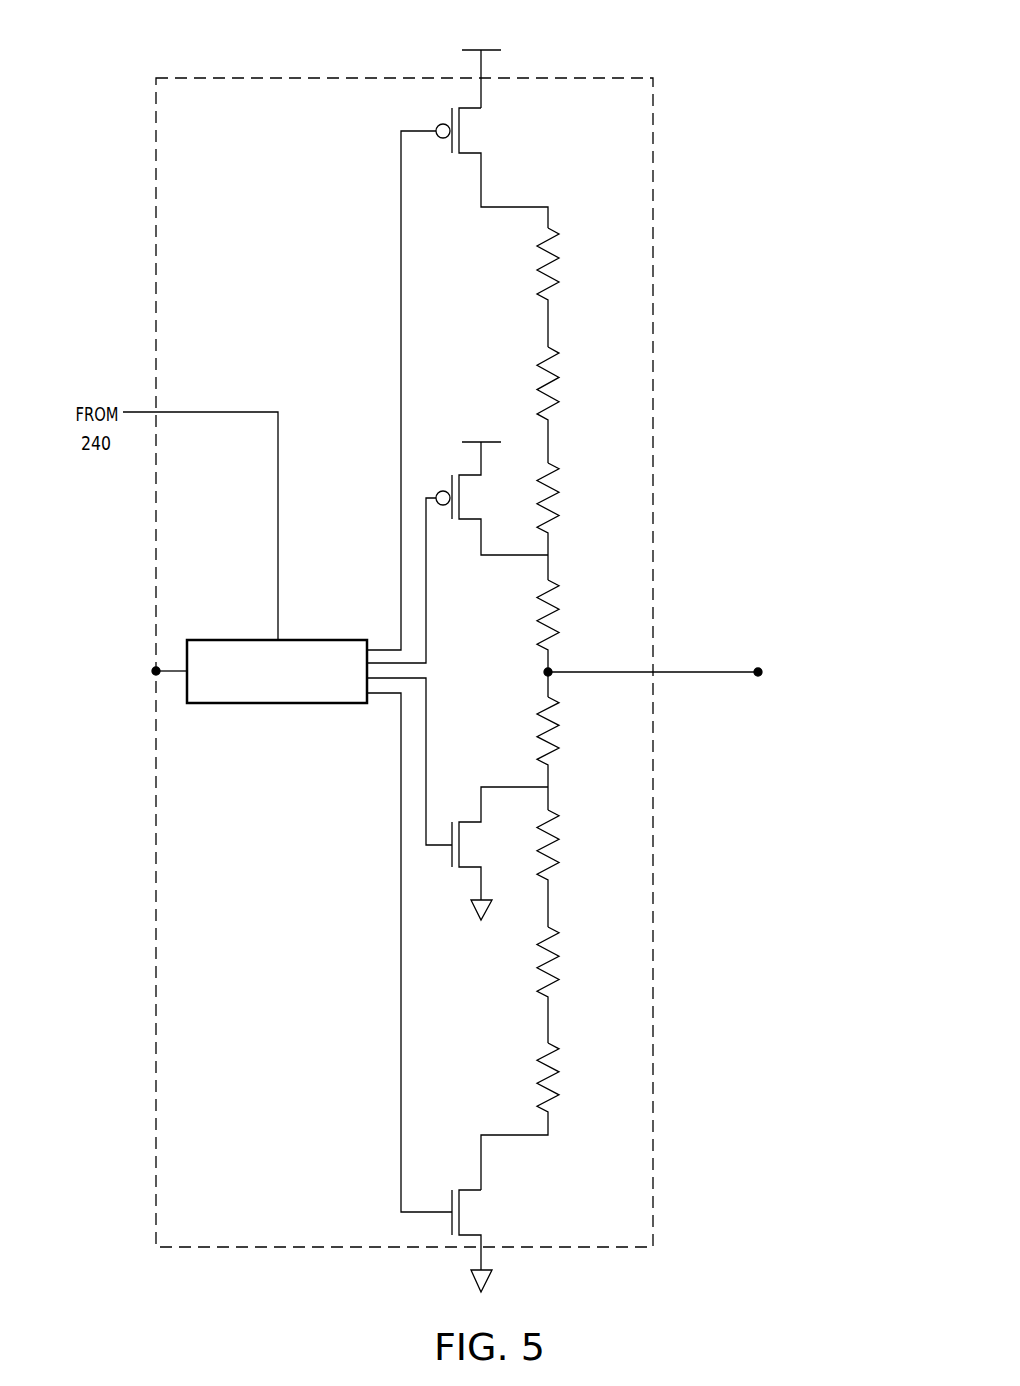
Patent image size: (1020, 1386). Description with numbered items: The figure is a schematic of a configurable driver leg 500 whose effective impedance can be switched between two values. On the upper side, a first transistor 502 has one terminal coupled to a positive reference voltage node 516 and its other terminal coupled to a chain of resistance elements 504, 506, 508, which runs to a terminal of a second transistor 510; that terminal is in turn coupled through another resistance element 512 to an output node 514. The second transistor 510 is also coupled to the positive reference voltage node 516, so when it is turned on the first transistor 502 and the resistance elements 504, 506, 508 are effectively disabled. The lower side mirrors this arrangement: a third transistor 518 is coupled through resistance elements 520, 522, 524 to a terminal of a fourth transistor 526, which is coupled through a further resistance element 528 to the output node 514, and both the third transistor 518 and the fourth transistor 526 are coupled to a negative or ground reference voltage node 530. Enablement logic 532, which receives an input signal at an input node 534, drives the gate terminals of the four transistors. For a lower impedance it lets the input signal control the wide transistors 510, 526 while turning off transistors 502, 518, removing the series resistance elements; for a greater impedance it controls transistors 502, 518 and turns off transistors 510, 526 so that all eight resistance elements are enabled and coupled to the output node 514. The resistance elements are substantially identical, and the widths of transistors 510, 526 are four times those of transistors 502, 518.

The configurable driver leg 500 is at (653, 310).
The first transistor 502 is at (483, 130).
The resistance element 504 is at (560, 259).
The resistance element 506 is at (560, 374).
The resistance element 508 is at (560, 489).
The second transistor 510 is at (491, 442).
The resistance element 512 is at (560, 605).
The output node 514 is at (760, 665).
The positive reference voltage node 516 is at (491, 50).
The third transistor 518 is at (484, 1212).
The resistance element 520 is at (560, 1067).
The resistance element 522 is at (560, 954).
The resistance element 524 is at (560, 837).
The fourth transistor 526 is at (467, 803).
The resistance element 528 is at (560, 720).
The negative reference voltage node 530 is at (479, 912).
The enablement logic 532 is at (276, 703).
The input node 534 is at (156, 671).